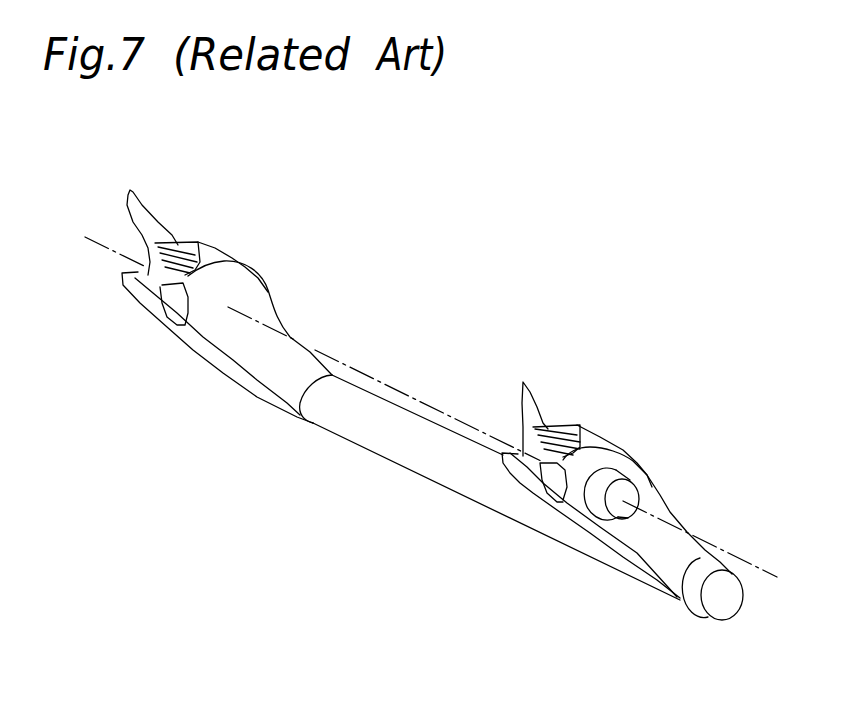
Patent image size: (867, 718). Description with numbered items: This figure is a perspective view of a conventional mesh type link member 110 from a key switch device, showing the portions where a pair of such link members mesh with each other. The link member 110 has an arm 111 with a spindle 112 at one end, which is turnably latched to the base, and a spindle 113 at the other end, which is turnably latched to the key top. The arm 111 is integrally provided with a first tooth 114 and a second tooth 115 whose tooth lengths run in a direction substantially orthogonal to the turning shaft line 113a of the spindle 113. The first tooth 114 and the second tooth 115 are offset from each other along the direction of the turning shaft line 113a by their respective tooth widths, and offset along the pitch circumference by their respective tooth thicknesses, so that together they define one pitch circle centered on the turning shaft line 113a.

The mesh type link member 110 is at (508, 287).
The arm 111 is at (235, 343).
The spindle 112 is at (723, 600).
The spindle 113 is at (633, 487).
The turning shaft line 113a is at (703, 537).
The first tooth 114 is at (187, 275).
The second tooth 115 is at (130, 190).